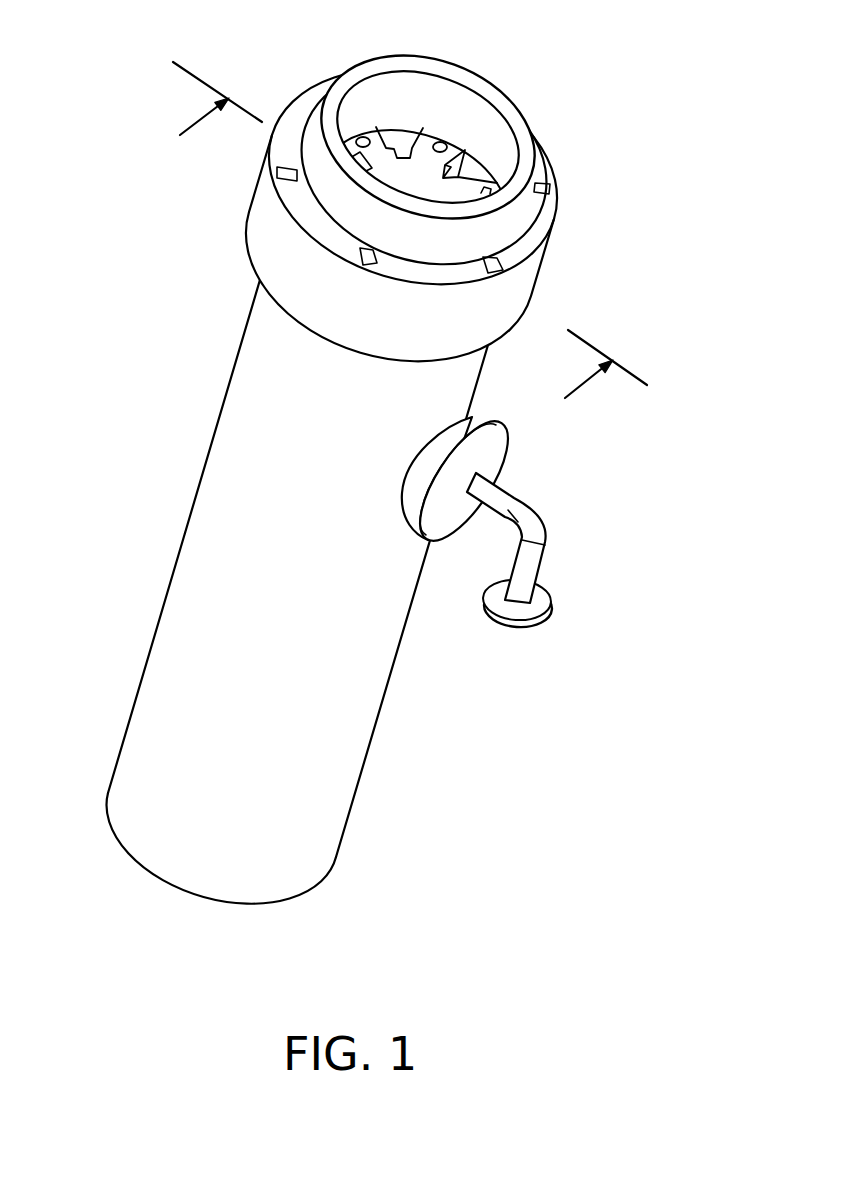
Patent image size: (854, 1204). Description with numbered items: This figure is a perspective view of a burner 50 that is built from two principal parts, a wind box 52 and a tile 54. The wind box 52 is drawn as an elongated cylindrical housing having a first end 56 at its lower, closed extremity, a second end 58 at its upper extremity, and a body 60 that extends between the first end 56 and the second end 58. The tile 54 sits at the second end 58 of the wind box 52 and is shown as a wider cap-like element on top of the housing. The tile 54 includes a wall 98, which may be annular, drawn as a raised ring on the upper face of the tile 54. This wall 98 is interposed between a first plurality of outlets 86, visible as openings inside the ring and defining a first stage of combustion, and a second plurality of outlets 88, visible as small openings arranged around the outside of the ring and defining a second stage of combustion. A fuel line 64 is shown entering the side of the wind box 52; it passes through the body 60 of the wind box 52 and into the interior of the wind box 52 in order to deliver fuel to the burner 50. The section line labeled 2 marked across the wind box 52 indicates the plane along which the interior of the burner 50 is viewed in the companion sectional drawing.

The burner 50 is at (398, 496).
The wind box 52 is at (279, 631).
The tile 54 is at (410, 181).
The first end 56 is at (277, 904).
The second end 58 is at (243, 392).
The body 60 is at (172, 640).
The fuel line 64 is at (522, 516).
The first plurality of outlets 86 is at (364, 137).
The second plurality of outlets 88 is at (276, 170).
The wall 98 is at (441, 124).
The section line 2- 2 is at (401, 233).